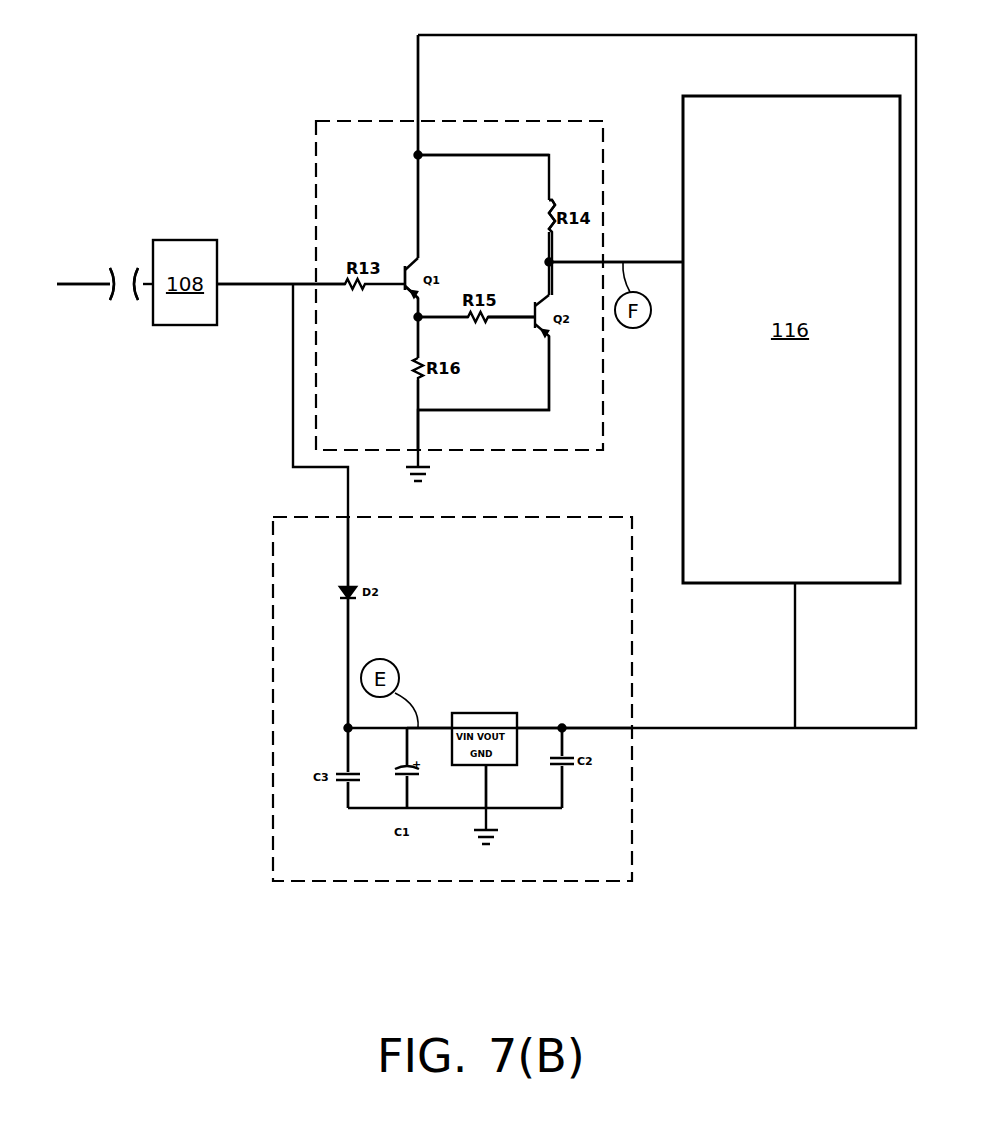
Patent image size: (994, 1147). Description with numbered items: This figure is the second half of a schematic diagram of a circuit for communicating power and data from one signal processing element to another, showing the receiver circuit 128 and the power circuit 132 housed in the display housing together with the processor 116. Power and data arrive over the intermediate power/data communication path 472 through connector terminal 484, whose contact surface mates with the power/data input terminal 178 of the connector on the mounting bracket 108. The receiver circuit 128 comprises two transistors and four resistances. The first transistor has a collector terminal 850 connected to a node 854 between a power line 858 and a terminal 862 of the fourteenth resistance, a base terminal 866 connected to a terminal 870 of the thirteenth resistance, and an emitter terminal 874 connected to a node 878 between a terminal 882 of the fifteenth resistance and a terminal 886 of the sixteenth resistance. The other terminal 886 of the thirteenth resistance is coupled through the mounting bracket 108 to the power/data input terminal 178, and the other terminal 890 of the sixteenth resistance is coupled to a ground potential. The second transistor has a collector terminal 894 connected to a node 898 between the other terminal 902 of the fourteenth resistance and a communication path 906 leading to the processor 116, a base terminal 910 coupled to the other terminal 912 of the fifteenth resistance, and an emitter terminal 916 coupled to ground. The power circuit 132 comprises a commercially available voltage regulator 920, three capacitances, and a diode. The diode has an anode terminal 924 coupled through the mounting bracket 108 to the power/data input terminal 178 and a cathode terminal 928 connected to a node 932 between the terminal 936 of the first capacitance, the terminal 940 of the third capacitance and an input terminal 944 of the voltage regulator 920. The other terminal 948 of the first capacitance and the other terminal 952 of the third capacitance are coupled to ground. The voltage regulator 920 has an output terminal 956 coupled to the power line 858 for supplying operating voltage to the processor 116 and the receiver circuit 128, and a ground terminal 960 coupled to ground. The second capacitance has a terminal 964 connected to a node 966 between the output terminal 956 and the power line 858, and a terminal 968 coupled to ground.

The power line 858 is at (418, 80).
The receiver circuit 128 is at (505, 121).
The terminal of resistance R13 / terminal of resistance R16 886 is at (325, 284).
The base terminal 866 is at (402, 278).
The node 854 is at (418, 157).
The collector terminal 850 is at (418, 214).
The terminal of resistance R14 862 is at (549, 185).
The other terminal of resistance R14 902 is at (549, 245).
The node 898 is at (549, 262).
The collector terminal 894 is at (549, 292).
The terminal of resistance R13 870 is at (412, 291).
The emitter terminal 874 is at (418, 317).
The node 878 is at (418, 345).
The other terminal of resistance R16 890 is at (418, 400).
The terminal of resistance R15 882 is at (445, 317).
The base terminal 910 is at (518, 317).
The other terminal of resistance R15 912 is at (492, 317).
The emitter terminal 916 is at (542, 410).
The communication path 906 is at (645, 262).
The processor 116 is at (791, 339).
The mounting bracket 108 is at (185, 282).
The intermediate power/data communication path 472 is at (82, 284).
The connector terminal 484 is at (113, 290).
The power/data input terminal 178 is at (136, 290).
The anode terminal 924 is at (348, 540).
The cathode terminal 928 is at (348, 628).
The input terminal 944 is at (440, 728).
The voltage regulator 920 is at (487, 713).
The output terminal 956 is at (535, 728).
The node 966 is at (565, 728).
The node 932 is at (348, 728).
The terminal of capacitance C3 940 is at (348, 752).
The terminal of capacitance C1 936 is at (407, 740).
The other terminal of capacitance C1 948 is at (407, 795).
The ground terminal 960 is at (486, 790).
The terminal of capacitance C2 964 is at (562, 742).
The other terminal of capacitance C3 952 is at (348, 795).
The terminal of capacitance C2 968 is at (562, 790).
The power circuit 132 is at (497, 881).